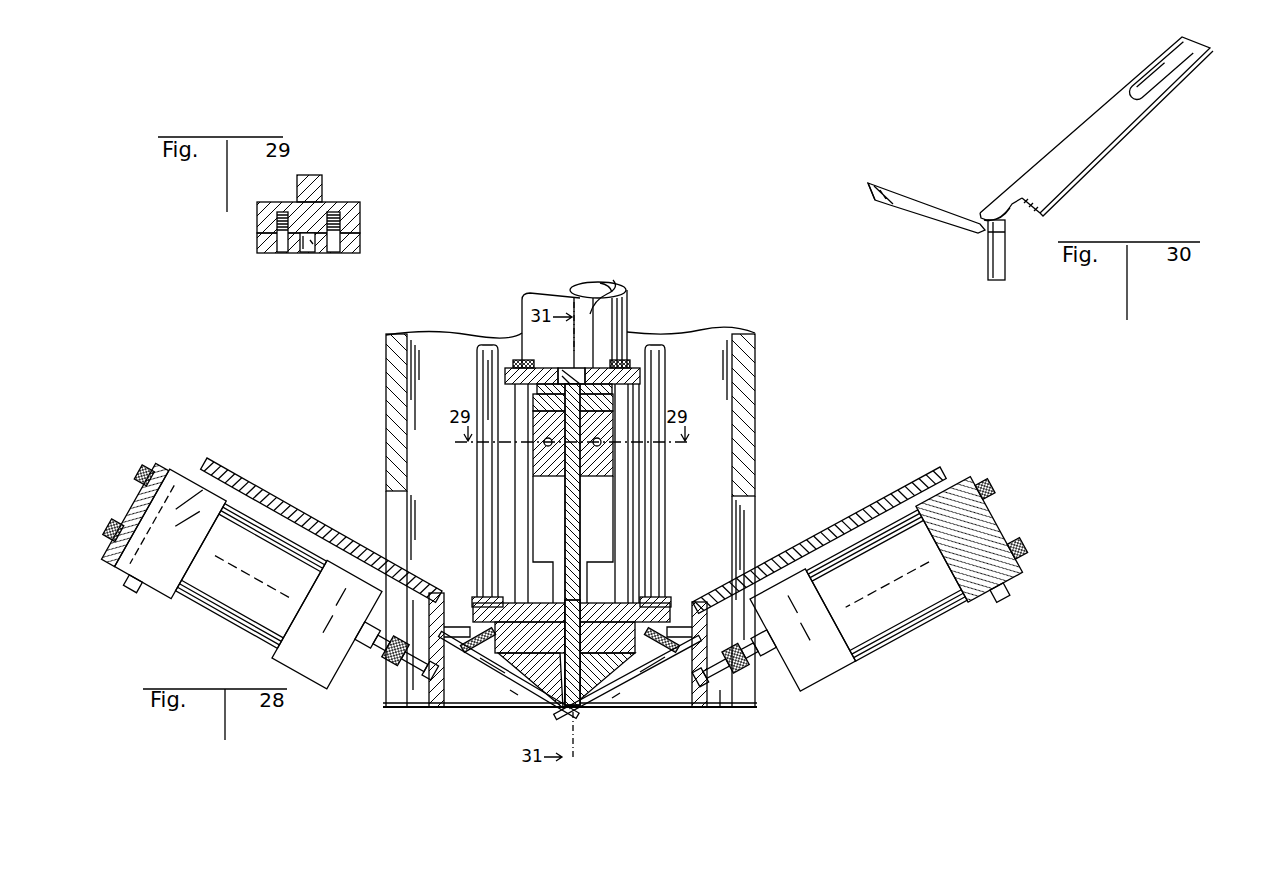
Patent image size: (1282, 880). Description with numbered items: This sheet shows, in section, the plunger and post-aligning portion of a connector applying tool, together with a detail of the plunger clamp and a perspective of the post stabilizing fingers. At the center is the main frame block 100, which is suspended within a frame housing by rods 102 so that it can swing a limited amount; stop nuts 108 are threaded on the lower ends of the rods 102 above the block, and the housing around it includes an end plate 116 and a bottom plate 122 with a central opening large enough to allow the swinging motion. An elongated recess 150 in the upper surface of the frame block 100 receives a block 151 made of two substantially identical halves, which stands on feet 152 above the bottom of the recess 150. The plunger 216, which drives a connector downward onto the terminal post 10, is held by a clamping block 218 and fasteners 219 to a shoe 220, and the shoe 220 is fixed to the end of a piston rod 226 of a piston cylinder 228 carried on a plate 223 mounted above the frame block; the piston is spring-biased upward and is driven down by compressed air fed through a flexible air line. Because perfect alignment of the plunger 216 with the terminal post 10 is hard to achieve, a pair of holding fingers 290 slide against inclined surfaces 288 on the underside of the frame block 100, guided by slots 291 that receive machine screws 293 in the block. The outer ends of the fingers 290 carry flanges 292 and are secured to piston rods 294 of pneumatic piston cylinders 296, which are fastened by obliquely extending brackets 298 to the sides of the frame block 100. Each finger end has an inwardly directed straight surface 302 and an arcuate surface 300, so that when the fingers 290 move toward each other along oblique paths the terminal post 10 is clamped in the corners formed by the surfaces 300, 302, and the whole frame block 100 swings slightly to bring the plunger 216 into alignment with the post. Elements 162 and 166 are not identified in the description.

In FIG. 30, the terminal post 10 is at (988, 262).
In FIG. 28, the main frame block 100 is at (470, 703).
In FIG. 28, the rods 102 is at (480, 522).
In FIG. 28, the stop nuts 108 is at (472, 600).
In FIG. 28, the end plate 116 is at (735, 335).
In FIG. 28, the bottom plate 122 is at (722, 700).
In FIG. 28, the elongated recess 150 is at (596, 658).
In FIG. 28, the block 151 is at (582, 618).
In FIG. 28, the feet 152 is at (520, 660).
In FIG. 28, the tie rod 162 is at (636, 590).
In FIG. 29, the key 166 is at (323, 180).
In FIG. 28, the plunger 216 is at (582, 543).
In FIG. 29, the plunger 216 is at (305, 252).
In FIG. 28, the clamping block 218 is at (545, 477).
In FIG. 29, the clamping block 218 is at (360, 243).
In FIG. 28, the fasteners 219 is at (548, 438).
In FIG. 29, the fasteners 219 is at (280, 240).
In FIG. 28, the shoe 220 is at (613, 403).
In FIG. 29, the shoe 220 is at (360, 210).
In FIG. 28, the plate 223 is at (640, 377).
In FIG. 28, the piston rod 226 is at (594, 357).
In FIG. 28, the piston cylinder 228 is at (612, 280).
In FIG. 28, the inclined surfaces 288 is at (518, 698).
In FIG. 28, the holding fingers 290 is at (547, 712).
In FIG. 30, the holding fingers 290 is at (1080, 163).
In FIG. 28, the slots 291 is at (492, 676).
In FIG. 30, the slots 291 is at (1165, 72).
In FIG. 28, the flanges 292 is at (382, 690).
In FIG. 28, the machine screws 293 is at (429, 620).
In FIG. 28, the piston rods 294 is at (350, 640).
In FIG. 28, the pneumatic piston cylinders 296 is at (240, 605).
In FIG. 28, the obliquely extending brackets 298 is at (290, 496).
In FIG. 30, the arcuate surface 300 is at (990, 207).
In FIG. 30, the straight surface 302 is at (943, 200).